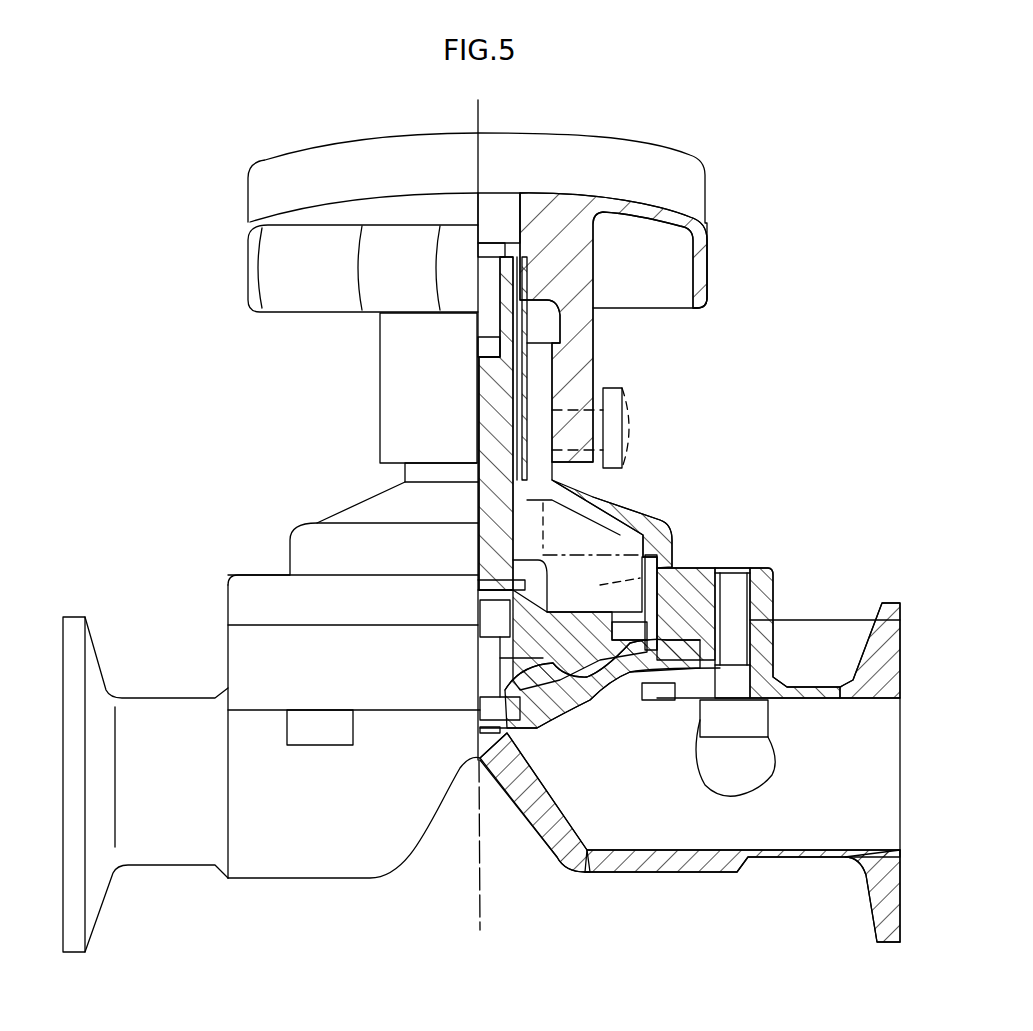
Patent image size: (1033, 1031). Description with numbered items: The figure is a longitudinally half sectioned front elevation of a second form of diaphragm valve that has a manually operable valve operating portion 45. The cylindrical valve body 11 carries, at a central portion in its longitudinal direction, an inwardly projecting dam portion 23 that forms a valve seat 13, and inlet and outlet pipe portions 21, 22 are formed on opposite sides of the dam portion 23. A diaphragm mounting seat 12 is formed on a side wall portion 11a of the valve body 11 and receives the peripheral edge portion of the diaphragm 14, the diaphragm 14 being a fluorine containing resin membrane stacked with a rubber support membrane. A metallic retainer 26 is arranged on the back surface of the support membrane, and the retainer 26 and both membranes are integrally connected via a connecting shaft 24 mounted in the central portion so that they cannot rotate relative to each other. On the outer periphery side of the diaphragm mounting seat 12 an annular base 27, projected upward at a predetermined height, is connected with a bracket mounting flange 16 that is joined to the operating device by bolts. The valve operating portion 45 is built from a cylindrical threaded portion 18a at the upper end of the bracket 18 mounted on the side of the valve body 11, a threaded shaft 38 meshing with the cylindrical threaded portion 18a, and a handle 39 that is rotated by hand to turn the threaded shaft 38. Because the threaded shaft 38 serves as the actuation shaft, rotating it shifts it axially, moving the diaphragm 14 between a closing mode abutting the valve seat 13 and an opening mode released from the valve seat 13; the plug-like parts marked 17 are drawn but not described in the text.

The handle 39 is at (620, 202).
The valve operating portion 45 is at (368, 373).
The threaded shaft 38 is at (497, 400).
The cylindrical threaded portion 18a is at (540, 370).
The bracket 18 is at (597, 500).
The bracket mounting flange 16 is at (683, 592).
The annular base 27 is at (768, 650).
The retainer 26 is at (557, 642).
The side wall portion 11a is at (192, 698).
The connecting shaft 24 is at (490, 660).
The valve seat 13 is at (482, 690).
The plug 17 is at (322, 745).
The diaphragm 14 is at (566, 730).
The diaphragm mounting seat 12 is at (662, 702).
The dam portion 23 is at (530, 800).
The outlet pipe portion 22 is at (392, 848).
The valve body 11 is at (328, 893).
The inlet pipe portion 21 is at (778, 858).